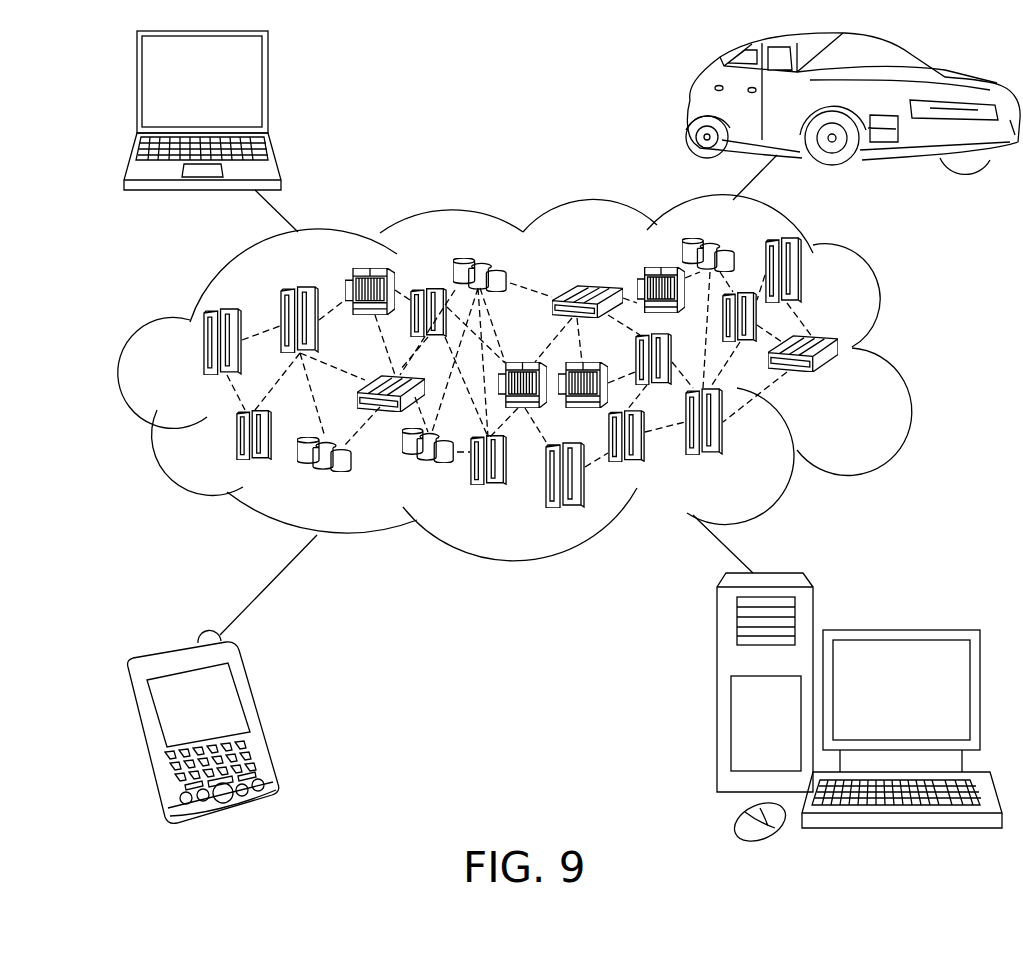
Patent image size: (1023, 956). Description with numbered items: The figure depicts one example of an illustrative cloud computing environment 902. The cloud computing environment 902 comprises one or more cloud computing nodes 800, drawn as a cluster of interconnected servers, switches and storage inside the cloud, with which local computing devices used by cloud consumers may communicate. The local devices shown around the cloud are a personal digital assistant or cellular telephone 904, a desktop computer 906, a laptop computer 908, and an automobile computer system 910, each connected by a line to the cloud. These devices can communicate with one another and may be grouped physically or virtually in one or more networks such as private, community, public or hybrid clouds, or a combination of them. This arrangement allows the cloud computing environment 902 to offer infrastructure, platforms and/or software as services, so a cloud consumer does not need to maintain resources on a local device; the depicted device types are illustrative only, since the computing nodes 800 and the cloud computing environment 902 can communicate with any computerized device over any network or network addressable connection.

The computing nodes 800 is at (848, 384).
The cloud computing environment 902 is at (898, 352).
The personal digital assistant (PDA) or cellular telephone 904 is at (258, 720).
The desktop computer 906 is at (898, 630).
The laptop computer 908 is at (267, 89).
The automobile computer system 910 is at (690, 103).